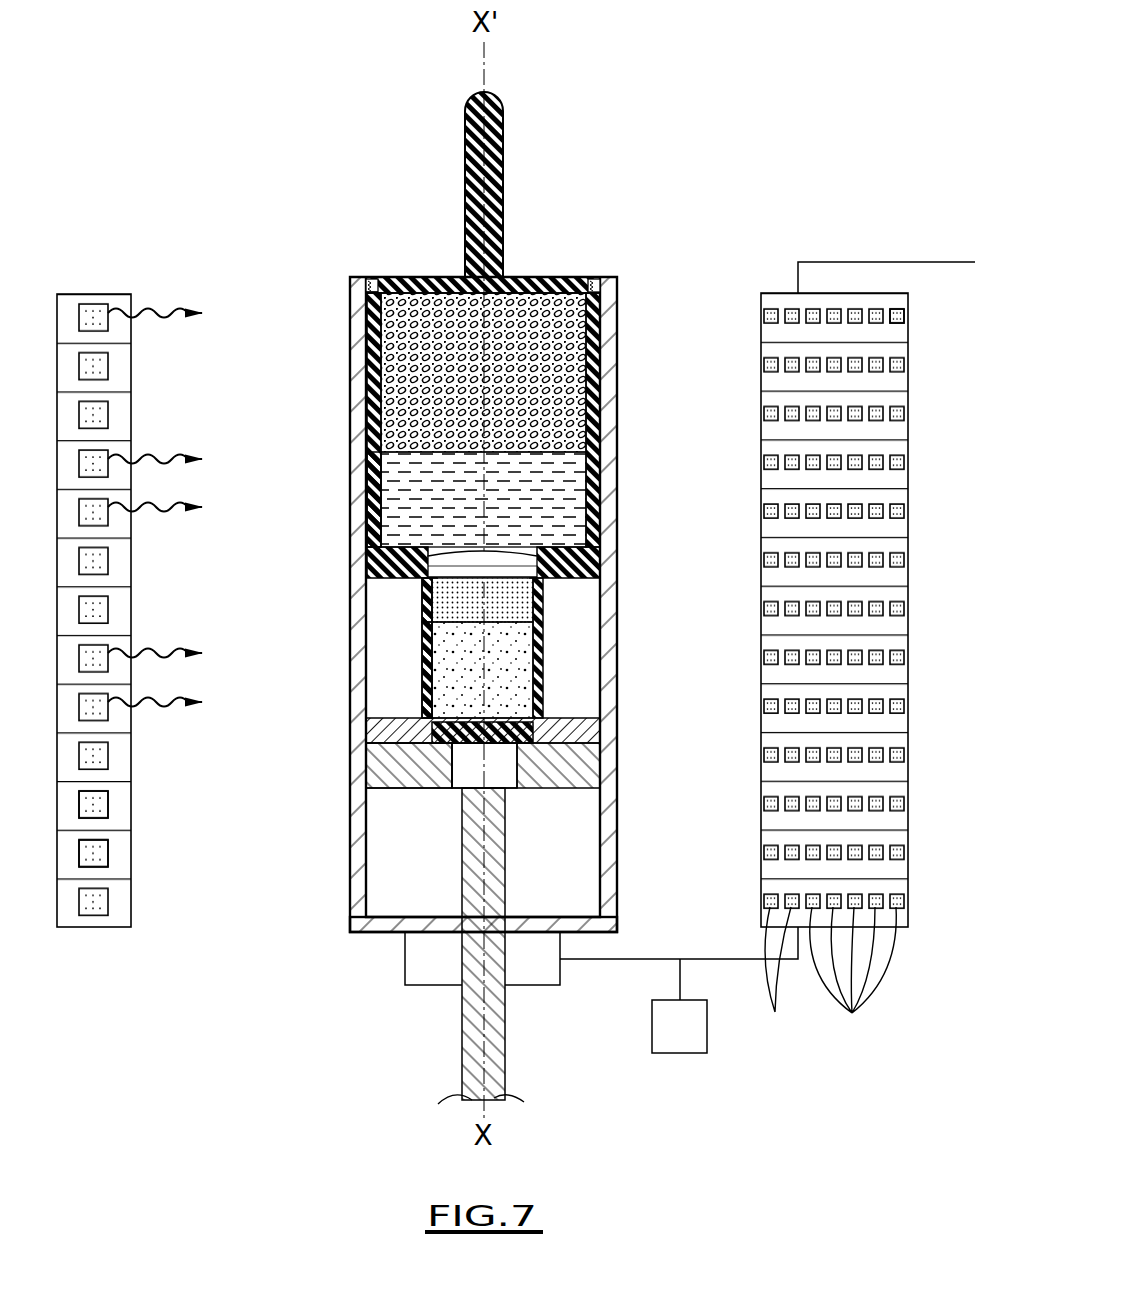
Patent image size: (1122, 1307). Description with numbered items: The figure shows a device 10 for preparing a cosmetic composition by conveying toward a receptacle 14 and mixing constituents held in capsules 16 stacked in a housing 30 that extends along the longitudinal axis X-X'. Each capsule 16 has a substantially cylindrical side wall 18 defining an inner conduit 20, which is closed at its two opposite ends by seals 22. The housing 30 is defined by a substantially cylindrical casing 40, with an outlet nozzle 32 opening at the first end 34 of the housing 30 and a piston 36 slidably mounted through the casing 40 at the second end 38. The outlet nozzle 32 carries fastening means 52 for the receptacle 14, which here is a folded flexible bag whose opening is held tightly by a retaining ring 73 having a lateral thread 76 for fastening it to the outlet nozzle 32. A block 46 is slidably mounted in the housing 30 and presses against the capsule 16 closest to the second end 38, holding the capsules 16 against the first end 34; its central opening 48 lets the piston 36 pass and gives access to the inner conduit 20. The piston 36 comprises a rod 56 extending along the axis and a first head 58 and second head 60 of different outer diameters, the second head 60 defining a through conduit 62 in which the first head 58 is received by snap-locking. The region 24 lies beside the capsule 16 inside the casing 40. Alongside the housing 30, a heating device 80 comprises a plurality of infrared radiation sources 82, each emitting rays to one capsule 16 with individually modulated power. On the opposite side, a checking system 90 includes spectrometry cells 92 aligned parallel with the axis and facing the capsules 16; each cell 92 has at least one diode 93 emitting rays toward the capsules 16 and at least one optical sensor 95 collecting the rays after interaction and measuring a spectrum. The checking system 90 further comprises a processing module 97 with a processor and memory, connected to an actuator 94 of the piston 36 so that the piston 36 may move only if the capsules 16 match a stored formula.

The device 10 is at (748, 272).
The receptacle 14 is at (500, 190).
The capsule 16 is at (556, 603).
The side wall 18 is at (602, 388).
The inner conduit 20 is at (452, 497).
The seal 22 is at (378, 506).
The annular chamber 24 is at (573, 680).
The housing 30 is at (412, 648).
The outlet nozzle 32 is at (621, 291).
The first end 34 is at (348, 322).
The piston 36 is at (508, 860).
The second end 38 is at (347, 878).
The casing 40 is at (604, 754).
The block 46 is at (395, 768).
The central opening 48 is at (462, 770).
The fastening means 52 is at (598, 282).
The rod 56 is at (492, 1023).
The first head 58 is at (533, 735).
The second head 60 is at (597, 567).
The through conduit 62 is at (423, 598).
The retaining ring 73 is at (372, 290).
The lateral thread 76 is at (372, 283).
The heating device 80 is at (141, 947).
The source of infrared radiation 82 is at (100, 845).
The checking system 90 is at (908, 957).
The spectrometry cell 92 is at (910, 322).
The diode 93 is at (853, 978).
The actuator 94 is at (420, 983).
The optical sensor 95 is at (775, 978).
The processing module 97 is at (678, 1056).